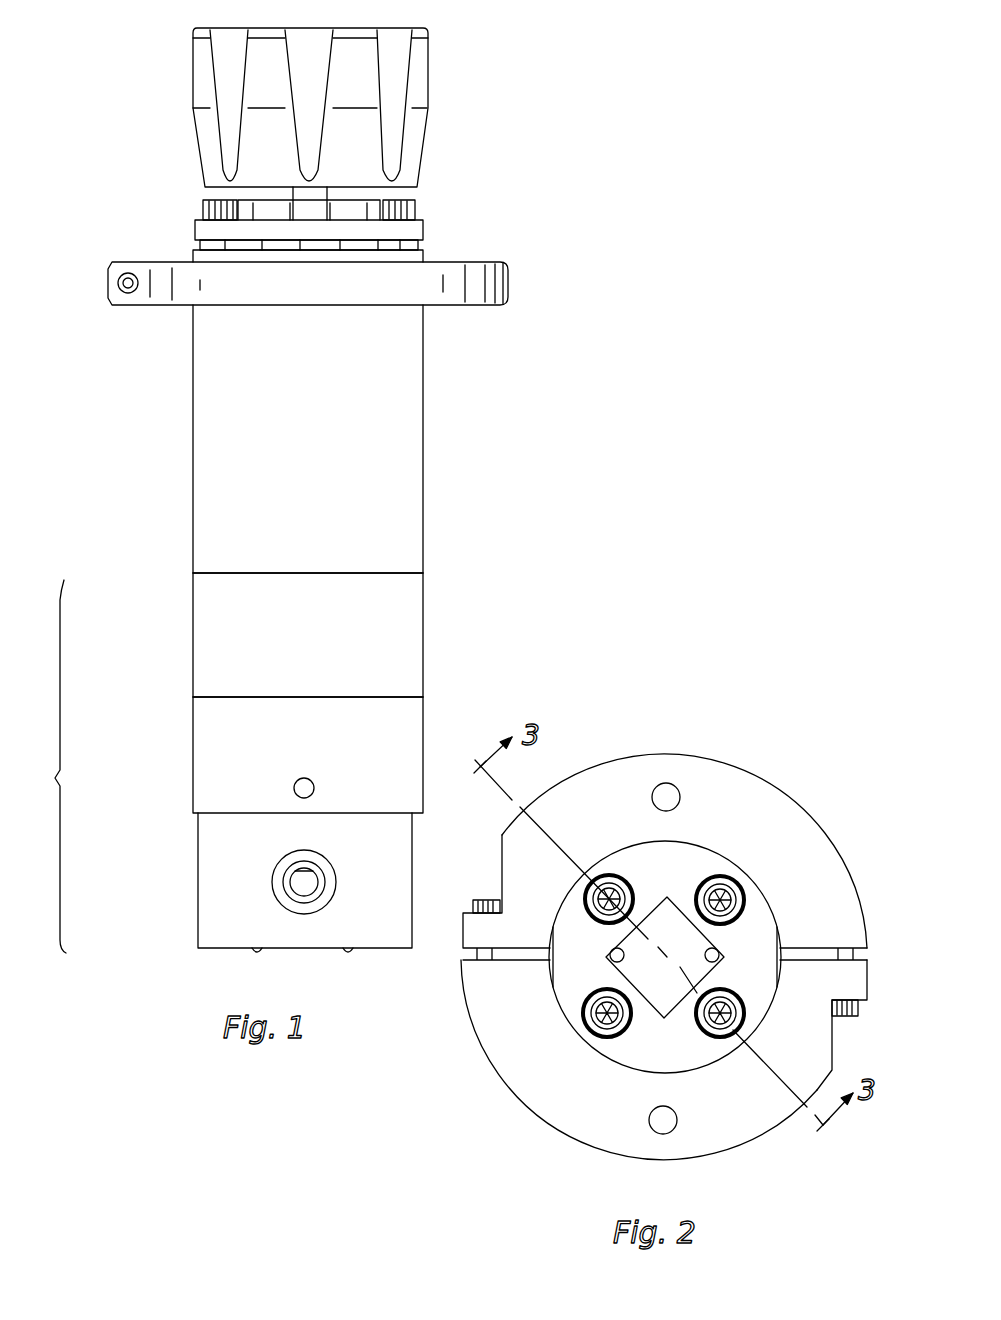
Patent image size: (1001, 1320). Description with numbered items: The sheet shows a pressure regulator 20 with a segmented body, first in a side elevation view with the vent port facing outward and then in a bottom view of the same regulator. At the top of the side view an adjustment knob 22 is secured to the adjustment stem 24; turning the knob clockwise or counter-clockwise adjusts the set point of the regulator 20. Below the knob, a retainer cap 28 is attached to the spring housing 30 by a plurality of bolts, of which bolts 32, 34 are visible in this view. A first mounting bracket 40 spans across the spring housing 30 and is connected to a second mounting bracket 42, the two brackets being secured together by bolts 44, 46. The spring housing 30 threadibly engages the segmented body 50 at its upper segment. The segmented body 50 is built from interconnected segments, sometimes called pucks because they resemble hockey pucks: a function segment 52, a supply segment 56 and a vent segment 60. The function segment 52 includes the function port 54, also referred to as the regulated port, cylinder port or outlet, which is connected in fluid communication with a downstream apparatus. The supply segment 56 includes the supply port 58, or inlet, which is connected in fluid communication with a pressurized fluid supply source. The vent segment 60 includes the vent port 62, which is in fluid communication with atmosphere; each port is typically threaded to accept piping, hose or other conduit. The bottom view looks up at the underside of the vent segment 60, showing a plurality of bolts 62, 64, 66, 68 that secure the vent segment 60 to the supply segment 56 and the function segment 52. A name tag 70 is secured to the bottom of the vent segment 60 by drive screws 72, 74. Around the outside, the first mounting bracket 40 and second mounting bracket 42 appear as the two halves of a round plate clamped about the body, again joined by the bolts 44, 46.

In FIG. 1, the regulator 20 is at (100, 88).
In FIG. 2, the regulator 20 is at (492, 1192).
In FIG. 1, the adjustment knob 22 is at (428, 62).
In FIG. 1, the adjustment stem 24 is at (313, 193).
In FIG. 1, the retainer cap 28 is at (423, 232).
In FIG. 1, the spring housing 30 is at (423, 400).
In FIG. 1, the bolt 32 is at (203, 208).
In FIG. 1, the bolt 34 is at (416, 210).
In FIG. 1, the first mounting bracket 40 is at (431, 305).
In FIG. 2, the first mounting bracket 40 is at (723, 762).
In FIG. 2, the second mounting bracket 42 is at (522, 1103).
In FIG. 1, the bolt 44 is at (128, 295).
In FIG. 2, the bolt 44 is at (486, 900).
In FIG. 2, the bolt 46 is at (850, 1016).
In FIG. 1, the segmented body 50 is at (44, 766).
In FIG. 1, the function segment 52 is at (192, 593).
In FIG. 1, the function port 54 is at (192, 658).
In FIG. 1, the supply segment 56 is at (192, 713).
In FIG. 1, the supply port 58 is at (421, 752).
In FIG. 1, the vent segment 60 is at (198, 935).
In FIG. 2, the vent segment 60 is at (657, 1055).
In FIG. 1, the vent port 62 is at (272, 885).
In FIG. 2, the vent port 62 is at (610, 893).
In FIG. 2, the bolt 64 is at (742, 892).
In FIG. 2, the bolt 66 is at (600, 1035).
In FIG. 2, the bolt 68 is at (723, 1037).
In FIG. 2, the name tag 70 is at (667, 897).
In FIG. 2, the drive screw 72 is at (719, 957).
In FIG. 2, the drive screw 74 is at (613, 962).